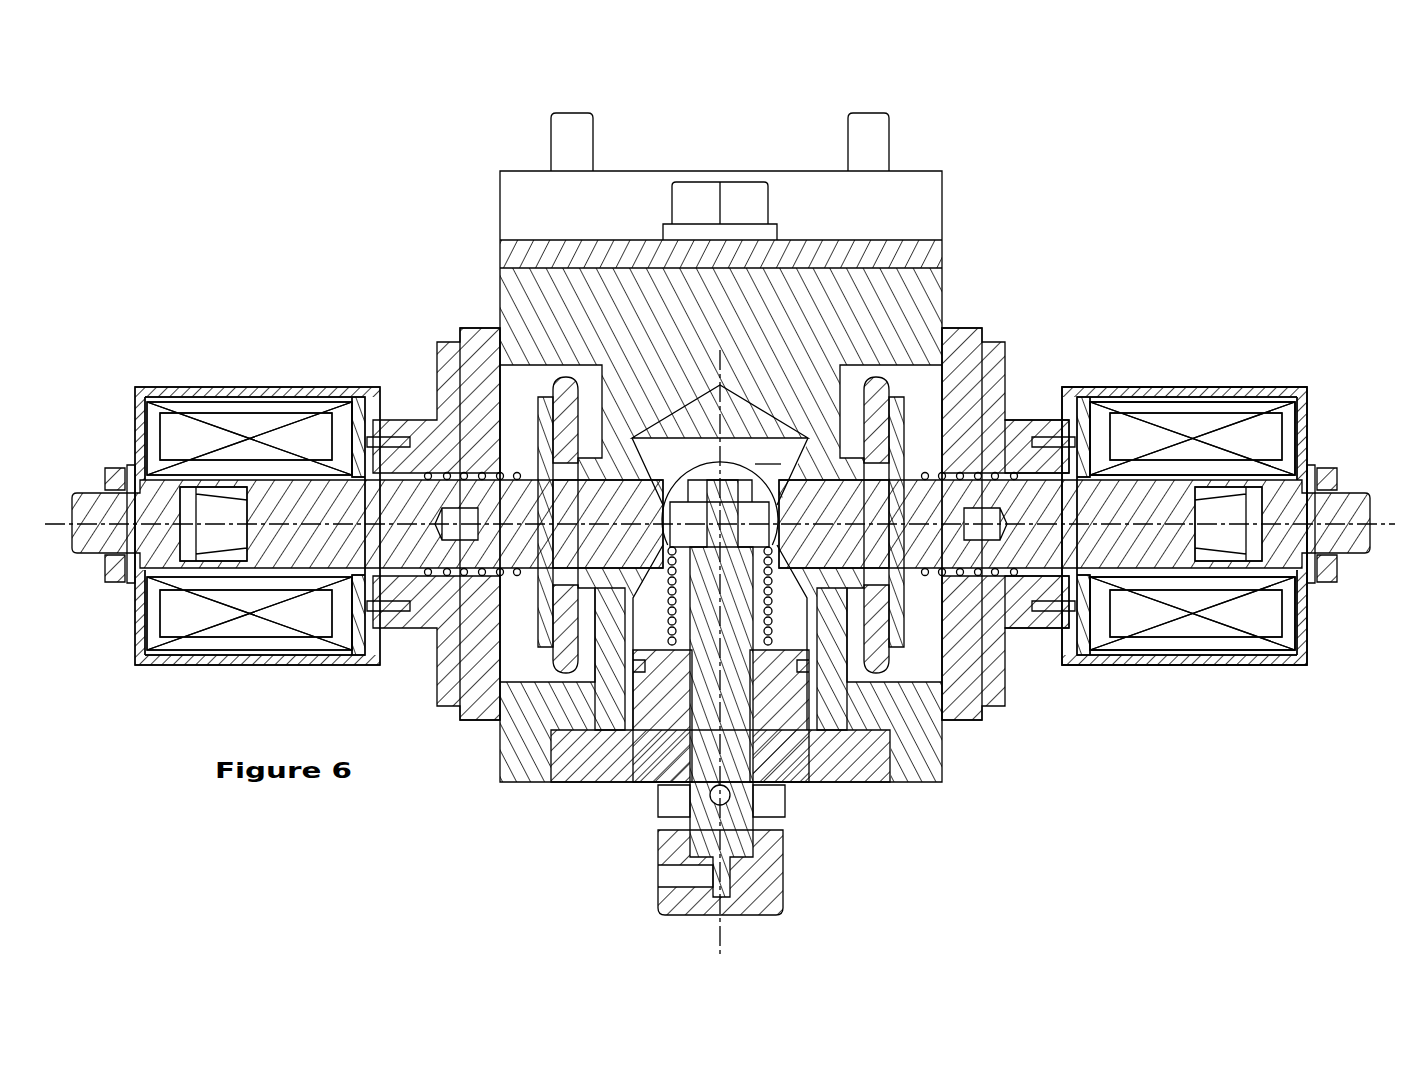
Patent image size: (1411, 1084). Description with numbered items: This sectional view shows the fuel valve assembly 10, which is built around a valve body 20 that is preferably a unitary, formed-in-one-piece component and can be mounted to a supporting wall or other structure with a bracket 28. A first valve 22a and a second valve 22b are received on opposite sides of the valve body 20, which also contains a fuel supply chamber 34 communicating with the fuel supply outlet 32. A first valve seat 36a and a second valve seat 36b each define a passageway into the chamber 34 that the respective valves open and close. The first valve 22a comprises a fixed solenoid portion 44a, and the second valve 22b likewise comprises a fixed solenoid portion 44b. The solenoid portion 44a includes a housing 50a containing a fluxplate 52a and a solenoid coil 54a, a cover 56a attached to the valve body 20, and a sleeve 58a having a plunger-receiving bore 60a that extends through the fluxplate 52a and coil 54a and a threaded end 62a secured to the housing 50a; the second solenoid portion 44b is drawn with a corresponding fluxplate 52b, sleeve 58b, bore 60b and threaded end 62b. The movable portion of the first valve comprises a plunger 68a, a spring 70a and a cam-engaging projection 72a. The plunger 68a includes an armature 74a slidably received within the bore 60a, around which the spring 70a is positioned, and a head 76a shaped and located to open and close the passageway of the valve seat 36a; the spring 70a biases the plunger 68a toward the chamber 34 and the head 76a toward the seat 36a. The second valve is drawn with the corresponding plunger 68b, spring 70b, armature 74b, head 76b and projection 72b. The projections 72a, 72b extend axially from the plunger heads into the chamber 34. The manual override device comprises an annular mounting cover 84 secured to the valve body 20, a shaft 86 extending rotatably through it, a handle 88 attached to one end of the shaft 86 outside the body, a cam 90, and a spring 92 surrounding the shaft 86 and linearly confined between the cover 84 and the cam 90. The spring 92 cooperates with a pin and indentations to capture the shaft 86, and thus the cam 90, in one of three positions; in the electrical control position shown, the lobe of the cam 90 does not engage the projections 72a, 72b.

The fuel valve assembly 10 is at (722, 126).
The valve body 20 is at (933, 287).
The bracket 28 is at (947, 210).
The first valve 22a is at (1095, 320).
The second valve 22b is at (285, 300).
The fuel supply outlet 32 is at (687, 420).
The fuel supply chamber 34 is at (768, 453).
The first valve seat 36a is at (840, 640).
The second valve seat 36b is at (560, 622).
The fixed solenoid portion 44a is at (1163, 370).
The fixed solenoid portion 44b is at (238, 672).
The housing 50a is at (1310, 380).
The fluxplate 52a is at (1300, 410).
The bearing retainer 52b is at (372, 635).
The solenoid coil 54a is at (1297, 435).
The cover 56a is at (1005, 440).
The sleeve 58a is at (1348, 565).
The nut 58b is at (90, 553).
The plunger-receiving bore 60a is at (1262, 502).
The rotor bore 60b is at (187, 502).
The threaded end 62a is at (1350, 540).
The washer 62b is at (92, 500).
The plunger 68a is at (1057, 540).
The shaft 68b is at (327, 510).
The spring 70a is at (965, 345).
The bearing bracket 70b is at (437, 372).
The cam-engaging projection 72a is at (836, 510).
The cam-engaging projection 72b is at (613, 500).
The armature 74a is at (1157, 550).
The armature 74b is at (370, 550).
The head 76a is at (885, 395).
The thrust plate 76b is at (563, 400).
The annular mounting cover 84 is at (585, 775).
The shaft 86 is at (700, 730).
The handle 88 is at (770, 888).
The cam 90 is at (748, 508).
The spring 92 is at (790, 690).